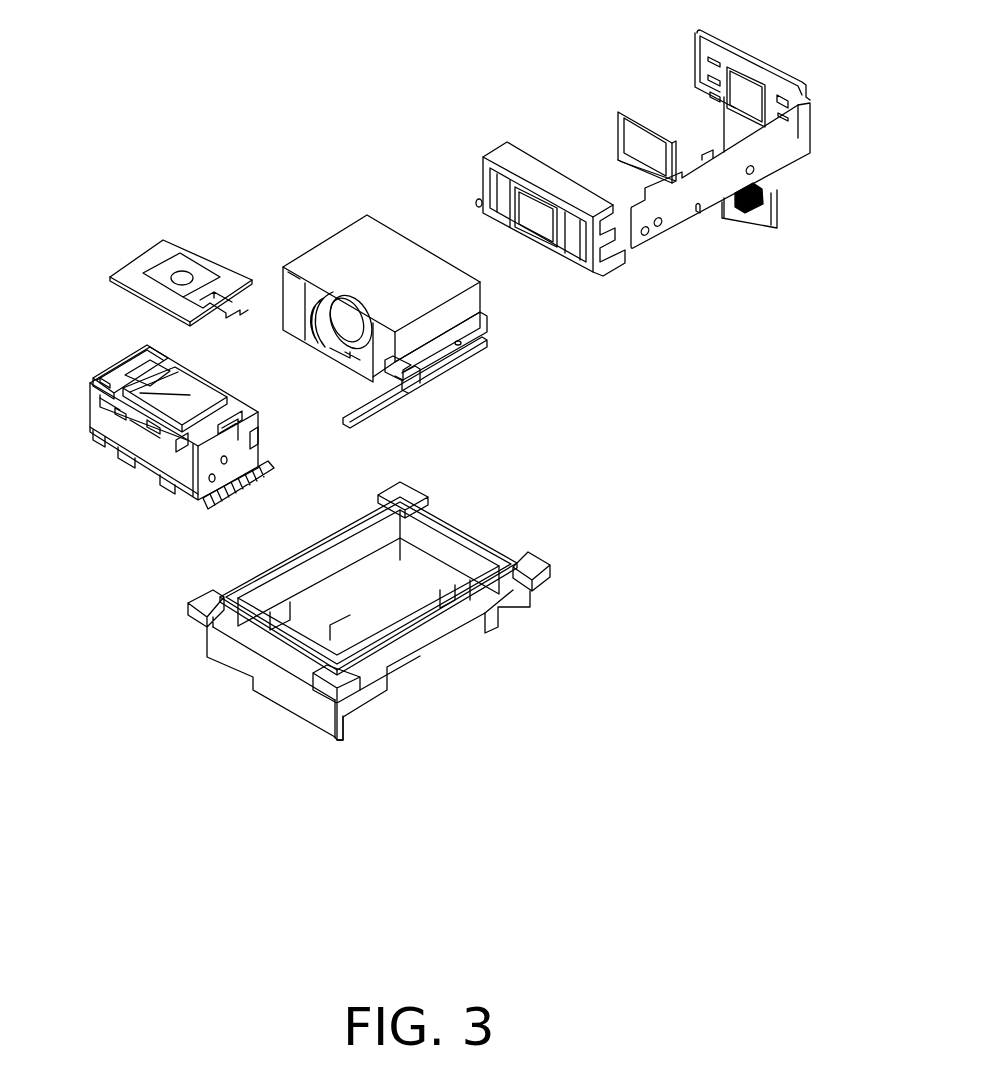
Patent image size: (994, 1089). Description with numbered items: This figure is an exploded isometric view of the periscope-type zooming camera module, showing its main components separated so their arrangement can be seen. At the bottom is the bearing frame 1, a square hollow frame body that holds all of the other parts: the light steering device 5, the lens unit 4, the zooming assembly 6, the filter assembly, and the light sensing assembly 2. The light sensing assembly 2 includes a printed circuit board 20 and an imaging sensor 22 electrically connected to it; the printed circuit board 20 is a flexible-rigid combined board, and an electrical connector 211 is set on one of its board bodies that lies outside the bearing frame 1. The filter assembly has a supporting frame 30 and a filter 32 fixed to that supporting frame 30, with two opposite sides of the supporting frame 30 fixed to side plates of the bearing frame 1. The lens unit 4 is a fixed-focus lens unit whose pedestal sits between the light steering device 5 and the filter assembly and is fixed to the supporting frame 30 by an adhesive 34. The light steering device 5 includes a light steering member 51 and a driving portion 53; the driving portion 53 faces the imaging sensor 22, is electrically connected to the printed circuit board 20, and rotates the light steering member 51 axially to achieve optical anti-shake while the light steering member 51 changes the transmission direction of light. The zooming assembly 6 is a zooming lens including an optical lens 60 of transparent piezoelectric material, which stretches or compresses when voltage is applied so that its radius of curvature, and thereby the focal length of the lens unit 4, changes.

The bearing frame 1 is at (428, 540).
The light sensing assembly 2 is at (817, 133).
The lens unit 4 is at (325, 262).
The light steering device 5 is at (37, 336).
The zooming assembly 6 is at (148, 260).
The printed circuit board 20 is at (782, 150).
The imaging sensor 22 is at (738, 92).
The supporting frame 30 is at (515, 158).
The filter 32 is at (633, 143).
The adhesive 34 is at (487, 188).
The light steering member 51 is at (123, 413).
The driving portion 53 is at (127, 365).
The optical lens 60 is at (182, 277).
The electrical connector 211 is at (750, 207).